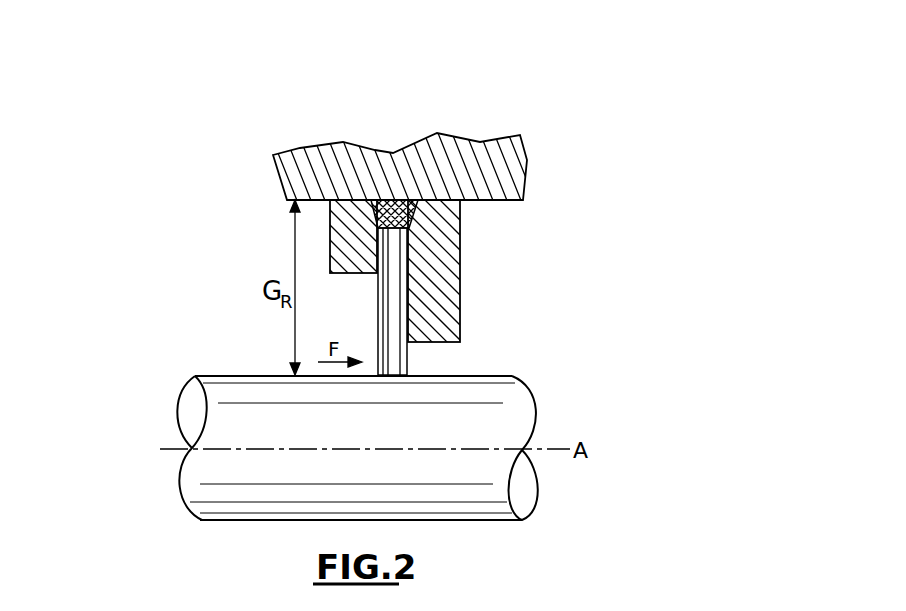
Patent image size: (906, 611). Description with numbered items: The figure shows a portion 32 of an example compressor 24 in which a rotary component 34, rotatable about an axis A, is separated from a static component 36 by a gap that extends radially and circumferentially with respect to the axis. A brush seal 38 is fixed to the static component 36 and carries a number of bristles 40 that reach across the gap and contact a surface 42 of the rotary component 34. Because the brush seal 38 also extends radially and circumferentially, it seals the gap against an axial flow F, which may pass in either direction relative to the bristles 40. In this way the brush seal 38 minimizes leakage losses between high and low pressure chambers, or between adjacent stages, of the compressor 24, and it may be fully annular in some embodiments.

The compressor 24 is at (116, 70).
The portion 32 is at (130, 170).
The rotary component 34 is at (218, 505).
The static component 36 is at (502, 168).
The brush seal 38 is at (389, 215).
The bristles 40 is at (398, 329).
The surface 42 is at (481, 377).